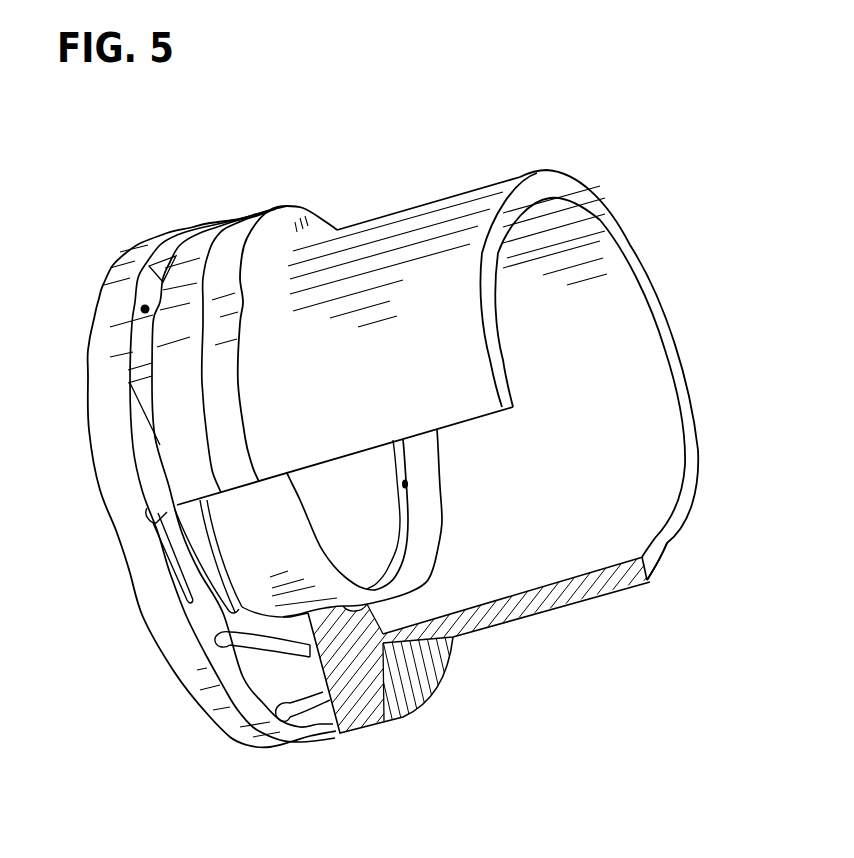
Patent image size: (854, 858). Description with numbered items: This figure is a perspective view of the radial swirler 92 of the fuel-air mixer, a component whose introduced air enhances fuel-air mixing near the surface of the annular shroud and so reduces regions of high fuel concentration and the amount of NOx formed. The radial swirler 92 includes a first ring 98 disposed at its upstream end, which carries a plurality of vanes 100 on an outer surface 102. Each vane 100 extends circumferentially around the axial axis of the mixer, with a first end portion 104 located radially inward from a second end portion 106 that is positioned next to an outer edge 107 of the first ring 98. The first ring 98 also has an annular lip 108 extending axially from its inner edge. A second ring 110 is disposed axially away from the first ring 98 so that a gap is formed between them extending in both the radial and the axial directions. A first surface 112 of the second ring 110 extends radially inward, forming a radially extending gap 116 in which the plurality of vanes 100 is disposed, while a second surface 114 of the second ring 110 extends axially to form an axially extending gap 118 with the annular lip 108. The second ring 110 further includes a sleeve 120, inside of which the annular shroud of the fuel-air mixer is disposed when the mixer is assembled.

The radial swirler 92 is at (385, 136).
The first ring 98 is at (130, 265).
The vanes 100 is at (253, 648).
The outer surface 102 is at (203, 616).
The first end portion 104 is at (210, 615).
The second end portion 106 is at (147, 508).
The outer edge 107 is at (108, 413).
The annular lip 108 is at (377, 538).
The second ring 110 is at (367, 707).
The first surface 112 is at (312, 737).
The second surface 114 is at (393, 618).
The radially extending gap 116 is at (145, 309).
The axially extending gap 118 is at (407, 482).
The sleeve 120 is at (663, 553).